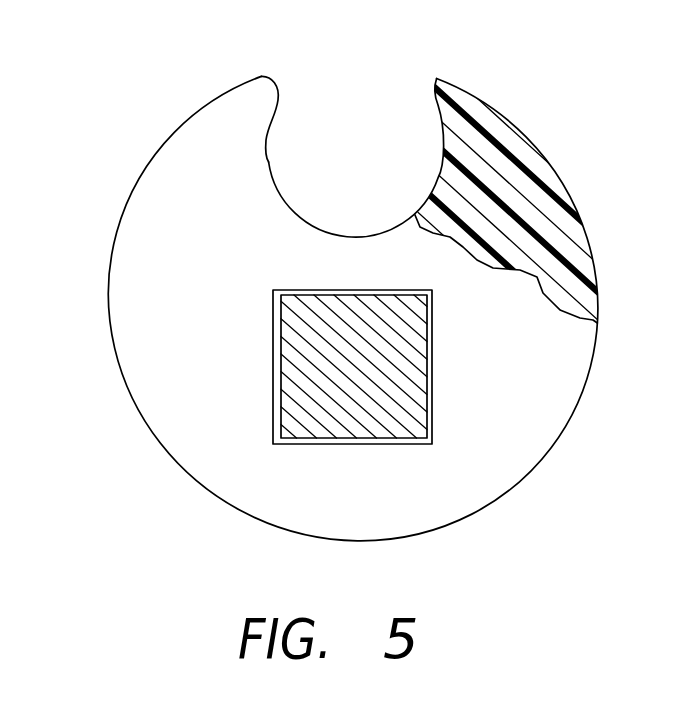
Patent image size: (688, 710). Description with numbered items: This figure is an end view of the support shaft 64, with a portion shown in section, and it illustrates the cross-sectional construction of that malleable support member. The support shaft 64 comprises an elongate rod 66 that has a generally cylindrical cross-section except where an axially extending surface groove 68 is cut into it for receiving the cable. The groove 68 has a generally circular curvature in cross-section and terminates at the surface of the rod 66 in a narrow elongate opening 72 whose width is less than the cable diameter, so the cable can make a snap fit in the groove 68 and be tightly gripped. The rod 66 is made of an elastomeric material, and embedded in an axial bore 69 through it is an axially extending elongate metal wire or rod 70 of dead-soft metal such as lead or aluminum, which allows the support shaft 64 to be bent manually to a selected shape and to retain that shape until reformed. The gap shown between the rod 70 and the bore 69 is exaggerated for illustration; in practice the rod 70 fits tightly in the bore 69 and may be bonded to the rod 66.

The support shaft 64 is at (119, 240).
The elongate rod 66 is at (528, 187).
The surface groove 68 is at (270, 170).
The axial bore 69 is at (410, 363).
The metal wire or rod 70 is at (313, 360).
The narrow elongate opening 72 is at (340, 118).